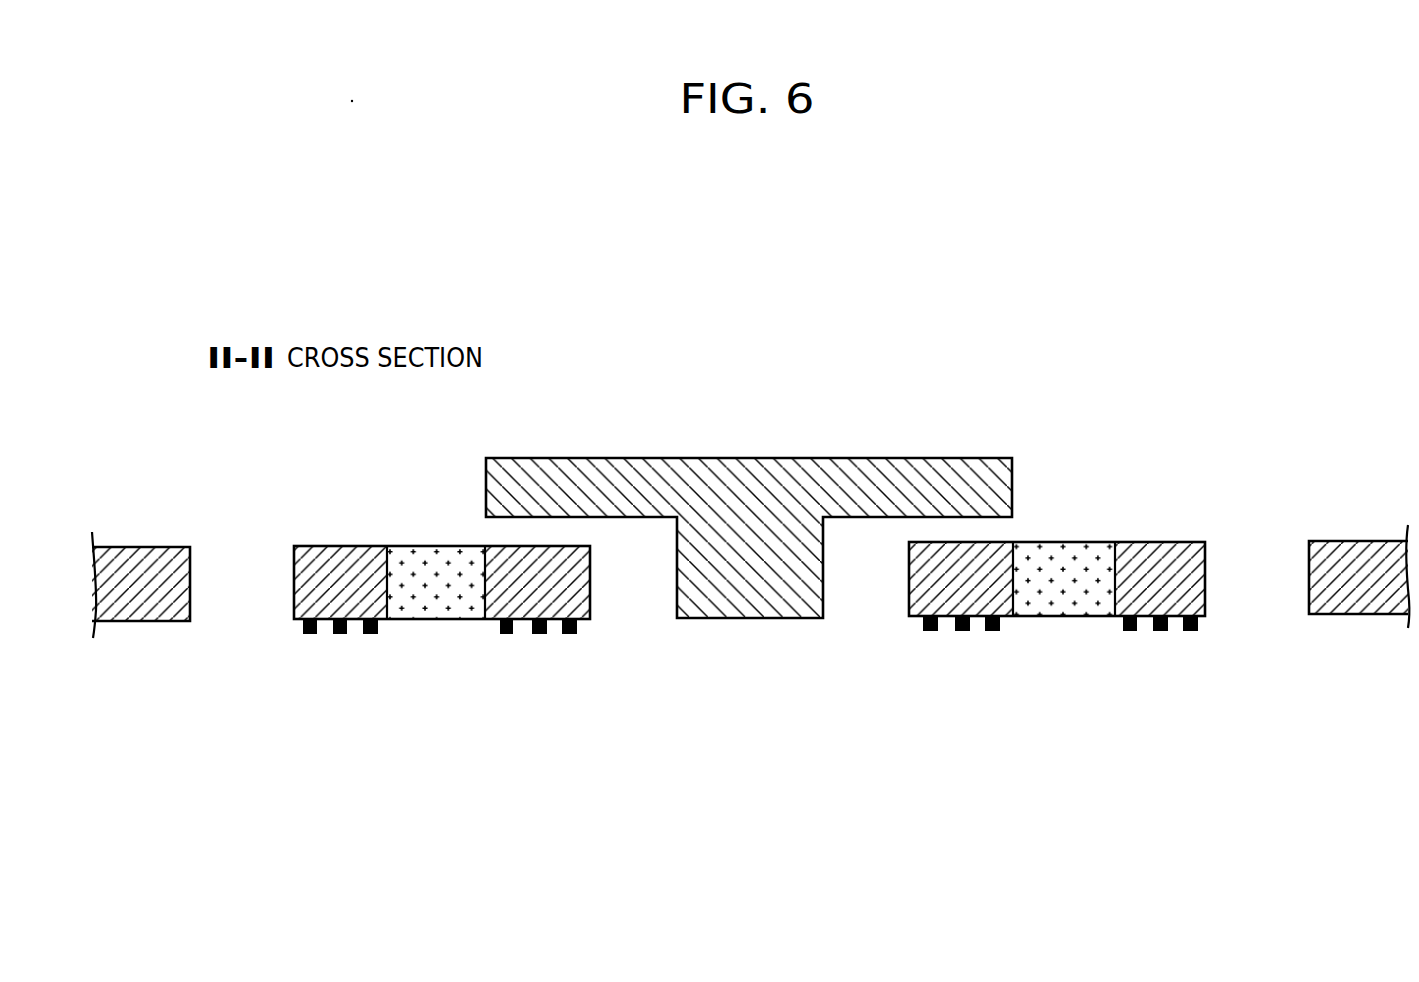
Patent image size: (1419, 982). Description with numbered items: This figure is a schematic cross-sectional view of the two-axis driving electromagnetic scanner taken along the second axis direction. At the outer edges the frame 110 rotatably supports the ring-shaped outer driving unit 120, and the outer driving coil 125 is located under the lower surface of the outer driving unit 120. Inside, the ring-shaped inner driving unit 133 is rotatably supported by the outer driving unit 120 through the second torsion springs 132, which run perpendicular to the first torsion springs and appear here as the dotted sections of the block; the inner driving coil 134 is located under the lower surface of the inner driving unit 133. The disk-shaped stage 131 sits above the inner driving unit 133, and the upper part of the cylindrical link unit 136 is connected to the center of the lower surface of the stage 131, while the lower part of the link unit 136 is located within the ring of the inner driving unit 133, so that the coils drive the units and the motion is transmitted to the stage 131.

The frame 110 is at (150, 553).
The outer driving unit 120 is at (763, 590).
The outer driving coil 125 is at (340, 636).
The stage 131 is at (754, 547).
The second torsion springs 132 is at (437, 598).
The inner driving unit 133 is at (566, 588).
The inner driving coil 134 is at (506, 636).
The link unit 136 is at (730, 600).